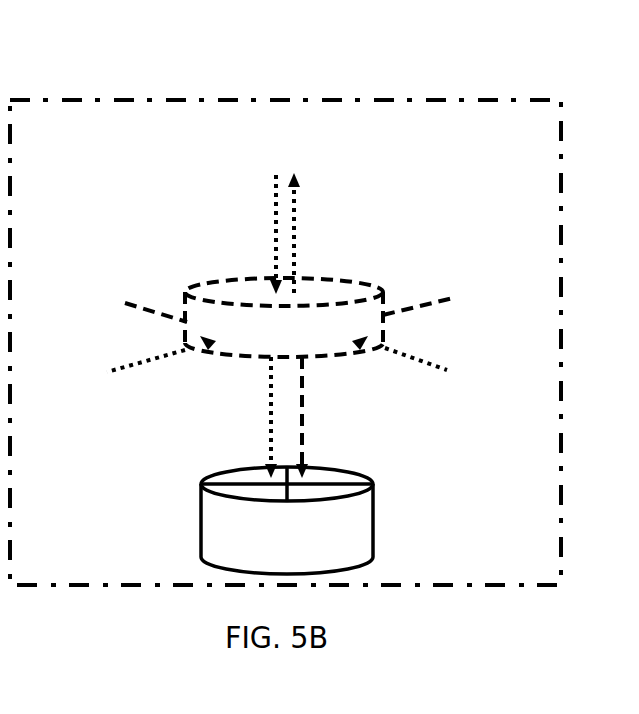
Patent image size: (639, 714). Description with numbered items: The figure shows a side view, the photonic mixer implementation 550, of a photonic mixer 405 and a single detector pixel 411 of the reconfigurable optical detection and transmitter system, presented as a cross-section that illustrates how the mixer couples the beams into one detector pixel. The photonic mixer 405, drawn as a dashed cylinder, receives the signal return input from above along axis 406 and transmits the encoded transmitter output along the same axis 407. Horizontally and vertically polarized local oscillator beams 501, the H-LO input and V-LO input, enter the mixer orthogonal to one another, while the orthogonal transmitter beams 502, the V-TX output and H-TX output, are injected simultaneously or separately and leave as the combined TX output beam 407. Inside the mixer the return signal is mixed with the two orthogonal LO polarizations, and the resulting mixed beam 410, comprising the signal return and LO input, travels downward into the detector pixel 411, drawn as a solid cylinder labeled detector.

The photonic mixer implementation 550 is at (515, 98).
The photonic mixer 405 is at (356, 283).
The signal return axis 406 is at (276, 261).
The TX output axis (combined TX output beam) 407 is at (294, 262).
The local oscillator beams 501 is at (83, 250).
The transmitter beams 502 is at (86, 438).
The mixed beam 410 is at (268, 427).
The detector pixel 411 is at (373, 508).